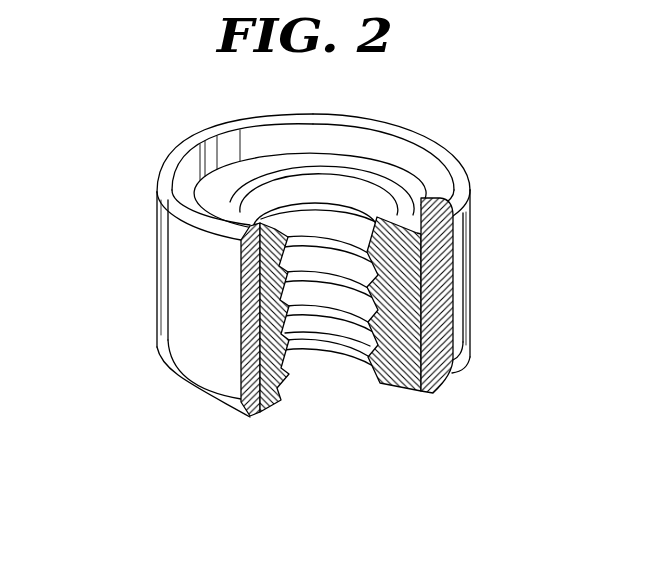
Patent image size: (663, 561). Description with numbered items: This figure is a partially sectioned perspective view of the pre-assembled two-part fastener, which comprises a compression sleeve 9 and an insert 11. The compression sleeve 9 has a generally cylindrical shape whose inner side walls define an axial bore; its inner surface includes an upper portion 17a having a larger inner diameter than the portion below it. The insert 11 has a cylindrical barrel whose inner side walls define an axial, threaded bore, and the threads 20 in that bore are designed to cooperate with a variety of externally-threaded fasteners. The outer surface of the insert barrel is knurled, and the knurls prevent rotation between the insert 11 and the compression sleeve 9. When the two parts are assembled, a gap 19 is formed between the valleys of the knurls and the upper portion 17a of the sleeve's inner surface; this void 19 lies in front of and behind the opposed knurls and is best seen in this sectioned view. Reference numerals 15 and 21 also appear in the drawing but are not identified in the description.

The compression sleeve 9 is at (173, 268).
The insert 11 is at (408, 372).
The upper end rim 15 is at (461, 184).
The upper portion 17a is at (377, 143).
The gap 19 is at (420, 252).
The threads 20 is at (287, 362).
The lower end 21 is at (440, 383).